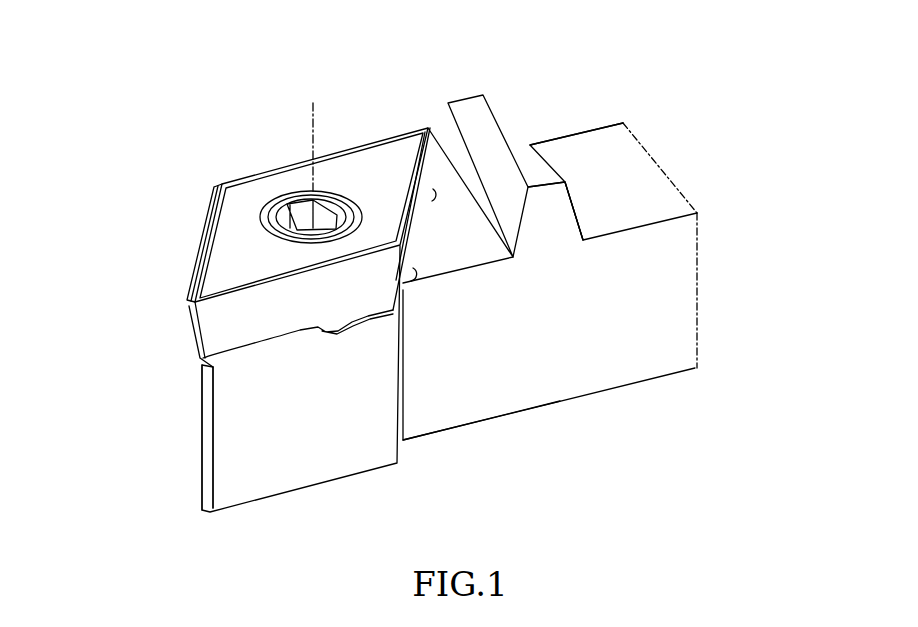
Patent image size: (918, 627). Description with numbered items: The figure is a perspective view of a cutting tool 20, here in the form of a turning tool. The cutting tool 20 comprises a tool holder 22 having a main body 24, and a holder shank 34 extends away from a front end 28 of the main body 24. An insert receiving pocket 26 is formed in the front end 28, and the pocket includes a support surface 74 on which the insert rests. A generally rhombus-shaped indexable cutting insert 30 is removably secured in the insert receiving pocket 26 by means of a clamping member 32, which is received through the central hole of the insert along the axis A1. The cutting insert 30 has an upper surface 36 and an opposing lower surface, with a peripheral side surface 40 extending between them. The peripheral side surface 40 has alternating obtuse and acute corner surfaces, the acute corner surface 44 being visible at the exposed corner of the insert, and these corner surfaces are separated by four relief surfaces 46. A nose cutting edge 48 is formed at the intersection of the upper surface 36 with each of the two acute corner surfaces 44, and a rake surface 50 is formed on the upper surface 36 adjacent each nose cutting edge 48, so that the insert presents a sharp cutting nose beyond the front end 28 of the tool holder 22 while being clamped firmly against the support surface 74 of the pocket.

The cutting tool 20 is at (596, 98).
The tool holder 22 is at (523, 321).
The main body 24 is at (508, 360).
The insert receiving pocket 26 is at (422, 234).
The front end 28 is at (301, 431).
The cutting insert 30 is at (230, 202).
The clamping member 32 is at (321, 206).
The holder shank 34 is at (632, 182).
The upper surface 36 is at (215, 245).
The peripheral side surface 40 is at (232, 334).
The acute corner surface 44 is at (200, 343).
The relief surface 46 is at (272, 322).
The nose cutting edge 48 is at (437, 190).
The rake surface 50 is at (424, 128).
The support surface 74 is at (443, 258).
The hole axis A1 is at (315, 134).